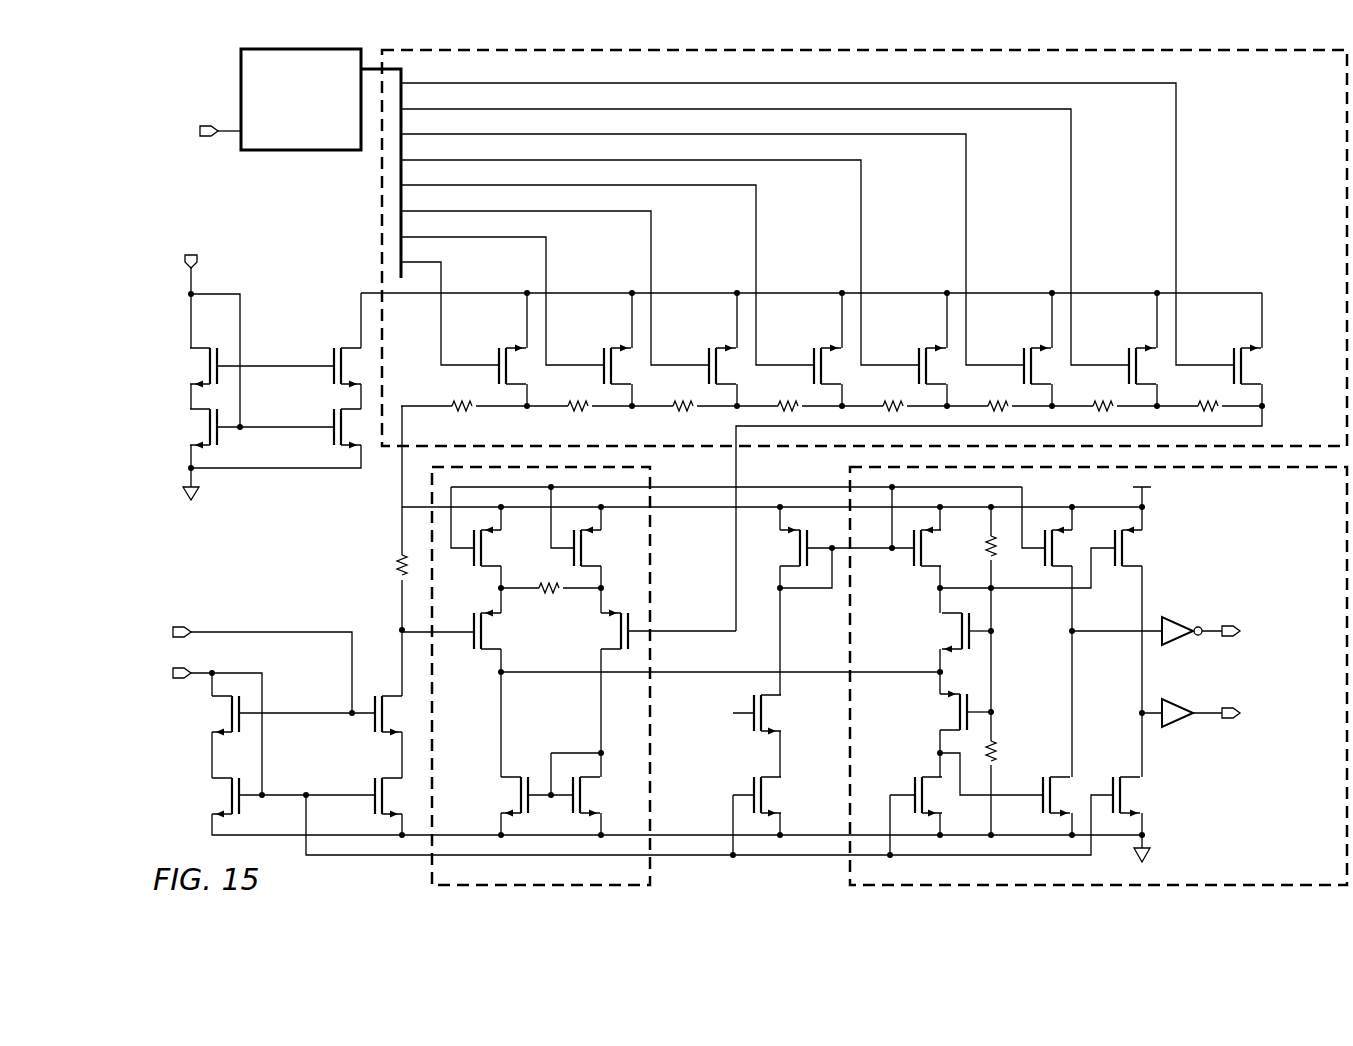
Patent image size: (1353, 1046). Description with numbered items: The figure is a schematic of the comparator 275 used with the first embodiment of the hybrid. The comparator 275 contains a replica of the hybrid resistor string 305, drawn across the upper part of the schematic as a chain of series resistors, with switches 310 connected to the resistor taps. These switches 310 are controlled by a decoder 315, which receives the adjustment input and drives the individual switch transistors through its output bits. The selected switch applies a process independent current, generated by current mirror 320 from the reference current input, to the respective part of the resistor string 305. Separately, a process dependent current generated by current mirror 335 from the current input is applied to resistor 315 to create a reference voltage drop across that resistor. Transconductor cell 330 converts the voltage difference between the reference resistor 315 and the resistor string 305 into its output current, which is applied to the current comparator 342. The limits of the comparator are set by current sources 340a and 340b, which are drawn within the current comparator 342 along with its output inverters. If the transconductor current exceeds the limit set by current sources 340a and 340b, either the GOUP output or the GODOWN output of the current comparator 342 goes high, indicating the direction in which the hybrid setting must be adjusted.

The comparator 275 is at (175, 554).
The decoder 315 is at (303, 152).
The switches 310 is at (1270, 331).
The resistor string 305 is at (1270, 394).
The current mirror 320 is at (179, 438).
The current mirror 335 is at (200, 806).
The transconductor cell 330 is at (654, 744).
The current source 340a is at (915, 585).
The current source 340b is at (915, 760).
The current comparator 342 is at (1098, 676).